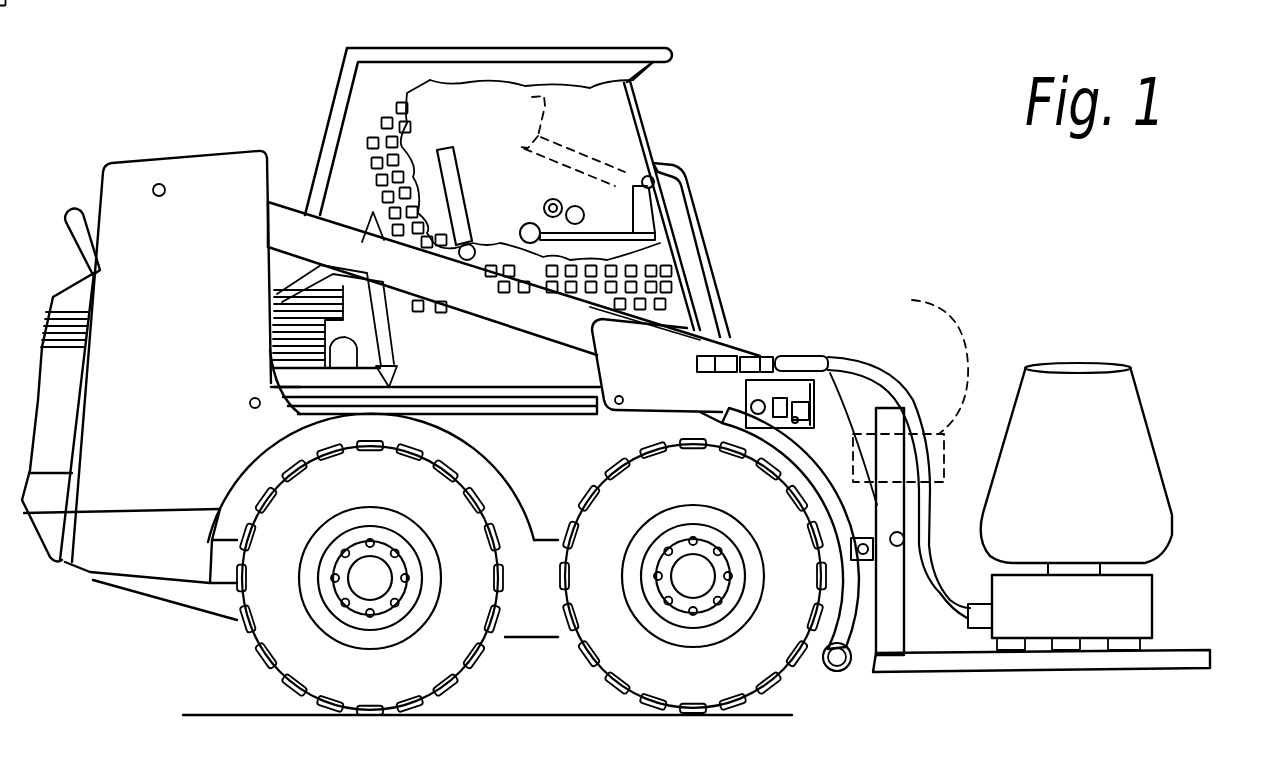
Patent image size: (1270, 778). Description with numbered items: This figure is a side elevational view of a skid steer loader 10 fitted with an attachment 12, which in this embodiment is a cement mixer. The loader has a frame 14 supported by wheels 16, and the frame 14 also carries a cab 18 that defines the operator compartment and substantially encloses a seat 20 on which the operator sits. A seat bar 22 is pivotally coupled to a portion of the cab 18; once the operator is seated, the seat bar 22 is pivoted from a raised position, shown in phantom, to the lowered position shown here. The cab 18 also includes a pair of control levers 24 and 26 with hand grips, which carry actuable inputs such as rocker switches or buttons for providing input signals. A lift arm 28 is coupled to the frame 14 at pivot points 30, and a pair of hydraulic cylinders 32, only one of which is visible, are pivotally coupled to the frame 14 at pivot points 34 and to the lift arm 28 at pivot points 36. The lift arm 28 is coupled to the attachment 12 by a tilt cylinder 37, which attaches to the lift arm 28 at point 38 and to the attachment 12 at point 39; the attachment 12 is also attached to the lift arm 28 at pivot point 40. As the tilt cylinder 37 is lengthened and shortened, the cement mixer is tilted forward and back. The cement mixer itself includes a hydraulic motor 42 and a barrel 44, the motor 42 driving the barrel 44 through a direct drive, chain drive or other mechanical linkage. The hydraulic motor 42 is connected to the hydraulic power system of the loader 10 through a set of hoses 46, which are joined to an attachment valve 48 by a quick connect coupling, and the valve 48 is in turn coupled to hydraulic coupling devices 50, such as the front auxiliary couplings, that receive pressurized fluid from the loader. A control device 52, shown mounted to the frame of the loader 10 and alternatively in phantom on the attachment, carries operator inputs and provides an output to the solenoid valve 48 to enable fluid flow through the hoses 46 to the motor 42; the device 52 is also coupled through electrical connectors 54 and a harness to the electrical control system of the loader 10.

The skid steer loader 10 is at (733, 124).
The attachment 12 is at (1160, 355).
The frame 14 is at (83, 553).
The wheels 16 is at (680, 753).
The cab 18 is at (541, 57).
The seat 20 is at (448, 150).
The seat bar 22 is at (653, 217).
The control lever 24 is at (547, 200).
The control lever 26 is at (563, 220).
The lift arm 28 is at (698, 336).
The pivot points 30 is at (155, 183).
The hydraulic cylinders 32 is at (519, 397).
The pivot points 34 is at (248, 403).
The pivot points 36 is at (625, 398).
The tilt cylinder 37 is at (857, 562).
The point 38 is at (850, 547).
The point 39 is at (898, 540).
The pivot point 40 is at (838, 671).
The hydraulic motor 42 is at (1152, 613).
The barrel 44 is at (1150, 480).
The hoses 46 is at (888, 366).
The attachment valve 48 is at (790, 353).
The hydraulic coupling devices 50 is at (768, 357).
The control device 52 is at (817, 397).
The electrical connectors 54 is at (697, 362).